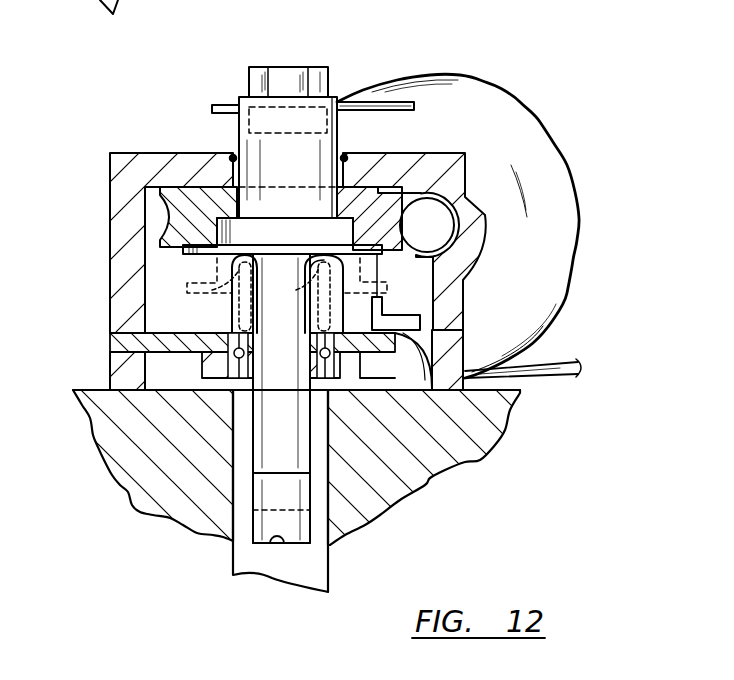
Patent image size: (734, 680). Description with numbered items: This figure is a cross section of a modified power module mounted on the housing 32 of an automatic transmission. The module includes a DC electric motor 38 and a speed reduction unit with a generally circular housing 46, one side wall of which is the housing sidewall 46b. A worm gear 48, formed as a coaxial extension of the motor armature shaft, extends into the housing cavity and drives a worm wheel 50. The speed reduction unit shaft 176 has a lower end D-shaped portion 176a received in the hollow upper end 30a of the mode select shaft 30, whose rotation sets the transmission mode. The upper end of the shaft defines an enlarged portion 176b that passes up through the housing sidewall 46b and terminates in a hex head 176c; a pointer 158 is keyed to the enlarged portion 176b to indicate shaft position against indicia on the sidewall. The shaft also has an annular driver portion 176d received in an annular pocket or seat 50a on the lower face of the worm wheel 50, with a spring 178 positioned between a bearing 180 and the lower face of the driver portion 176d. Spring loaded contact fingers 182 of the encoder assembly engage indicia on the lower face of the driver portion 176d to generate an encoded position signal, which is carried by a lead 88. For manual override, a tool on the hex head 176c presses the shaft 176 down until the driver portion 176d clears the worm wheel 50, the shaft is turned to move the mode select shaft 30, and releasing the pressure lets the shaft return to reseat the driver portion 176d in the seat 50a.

The mode select shaft 30 is at (230, 555).
The hollow upper end of mode select shaft 30a is at (276, 547).
The housing of the transmission 32 is at (409, 472).
The DC electric motor 38 is at (545, 120).
The circular housing 46 is at (106, 286).
The housing sidewall 46b is at (427, 153).
The worm gear 48 is at (440, 232).
The worm wheel 50 is at (187, 213).
The annular pocket or seat 50a is at (333, 230).
The lead 88 is at (563, 367).
The pointer 158 is at (408, 102).
The speed reduction unit shaft 176 is at (278, 294).
The lower end D-shaped portion 176a is at (280, 450).
The enlarged portion 176b is at (237, 117).
The hex head 176c is at (318, 67).
The annular driver portion 176d is at (210, 257).
The spring 178 is at (232, 331).
The bearing 180 is at (247, 363).
The spring loaded contact fingers 182 is at (378, 270).